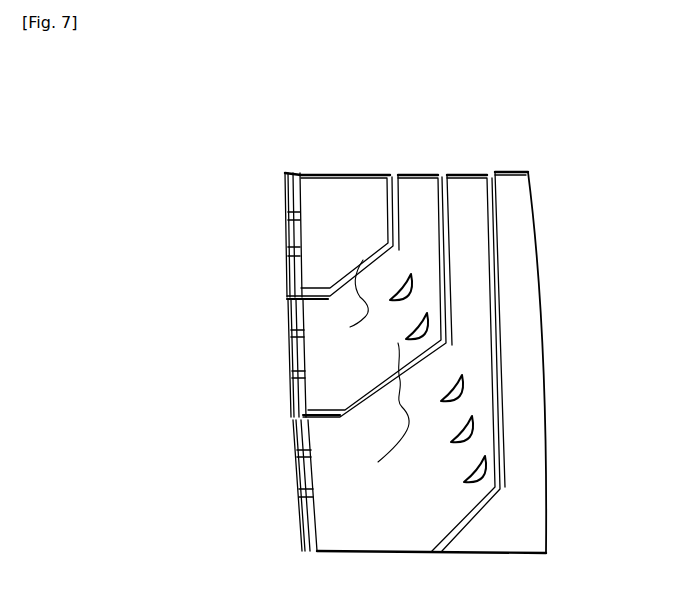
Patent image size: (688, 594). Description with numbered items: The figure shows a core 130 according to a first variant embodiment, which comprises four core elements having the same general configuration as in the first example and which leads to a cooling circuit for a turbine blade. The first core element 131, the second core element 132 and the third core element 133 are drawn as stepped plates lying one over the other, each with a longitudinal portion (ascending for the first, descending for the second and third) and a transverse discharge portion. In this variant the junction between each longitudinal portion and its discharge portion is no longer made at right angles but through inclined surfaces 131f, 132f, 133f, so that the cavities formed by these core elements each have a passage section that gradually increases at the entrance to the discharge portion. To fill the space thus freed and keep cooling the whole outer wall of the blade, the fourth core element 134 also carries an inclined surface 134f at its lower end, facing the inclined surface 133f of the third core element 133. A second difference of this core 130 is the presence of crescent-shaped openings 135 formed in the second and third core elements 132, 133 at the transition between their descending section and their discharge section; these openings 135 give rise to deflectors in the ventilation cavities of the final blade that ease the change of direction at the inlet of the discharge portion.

The core 130 is at (585, 180).
The first core element 131 is at (353, 172).
The inclined surface 131f is at (363, 260).
The second core element 132 is at (418, 173).
The inclined surface 132f is at (398, 343).
The third core element 133 is at (467, 173).
The inclined surface 133f is at (500, 527).
The fourth fin plate 134 is at (510, 170).
The fourth fin plate face 134f is at (500, 527).
The openings 135 is at (413, 289).